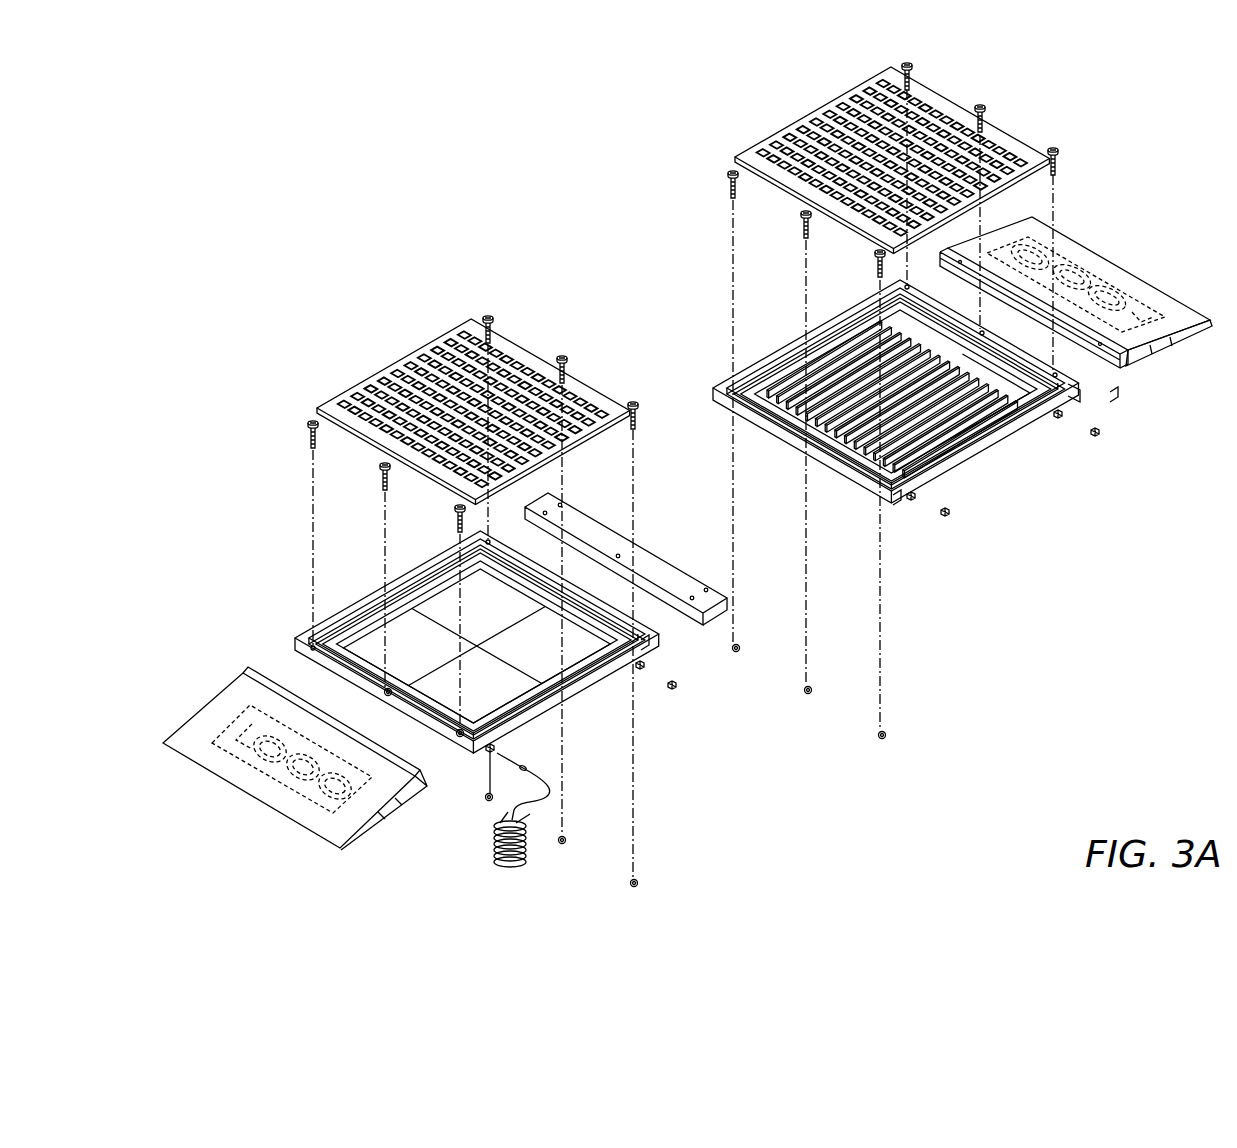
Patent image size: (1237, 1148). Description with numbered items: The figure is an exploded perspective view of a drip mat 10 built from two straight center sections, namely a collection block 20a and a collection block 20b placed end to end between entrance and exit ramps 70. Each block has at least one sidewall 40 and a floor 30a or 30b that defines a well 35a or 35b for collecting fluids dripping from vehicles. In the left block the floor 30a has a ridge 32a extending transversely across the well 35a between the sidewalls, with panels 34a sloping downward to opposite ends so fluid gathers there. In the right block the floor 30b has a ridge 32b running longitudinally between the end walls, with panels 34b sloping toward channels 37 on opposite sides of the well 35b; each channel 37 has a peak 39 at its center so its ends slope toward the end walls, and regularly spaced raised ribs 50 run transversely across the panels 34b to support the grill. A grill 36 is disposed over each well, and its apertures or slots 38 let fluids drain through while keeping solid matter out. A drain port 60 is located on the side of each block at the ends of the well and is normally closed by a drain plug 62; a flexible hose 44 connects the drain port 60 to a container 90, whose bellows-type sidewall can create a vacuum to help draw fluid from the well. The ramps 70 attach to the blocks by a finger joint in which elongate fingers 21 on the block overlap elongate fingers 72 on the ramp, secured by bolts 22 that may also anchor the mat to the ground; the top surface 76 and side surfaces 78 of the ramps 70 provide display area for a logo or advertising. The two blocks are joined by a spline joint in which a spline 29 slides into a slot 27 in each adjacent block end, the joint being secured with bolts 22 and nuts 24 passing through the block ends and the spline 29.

The drip mat 10 is at (690, 472).
The collection block 20a is at (437, 652).
The collection block 20b is at (913, 401).
The elongate fingers 21 is at (298, 664).
The bolts 22 is at (1052, 147).
The nuts 24 is at (391, 687).
The slot 27 is at (653, 642).
The spline 29 is at (655, 553).
The floor 30a is at (348, 616).
The floor 30b is at (746, 384).
The ridge 32a is at (562, 682).
The ridge 32b is at (800, 470).
The panels 34a is at (476, 646).
The panels 34b is at (1080, 392).
The well 35a is at (442, 574).
The well 35b is at (806, 362).
The grill 36 is at (406, 356).
The channels 37 is at (849, 330).
The apertures or slots 38 is at (838, 130).
The peak 39 is at (819, 345).
The sidewall 40 is at (622, 708).
The flexible hose 44 is at (552, 801).
The raised ribs 50 is at (1070, 406).
The drain port 60 is at (642, 673).
The drain plug 62 is at (677, 688).
The ramps 70 is at (690, 516).
The elongate fingers 72 is at (1125, 369).
The top surface 76 is at (1158, 300).
The side surfaces 78 is at (1166, 346).
The container 90 is at (483, 860).